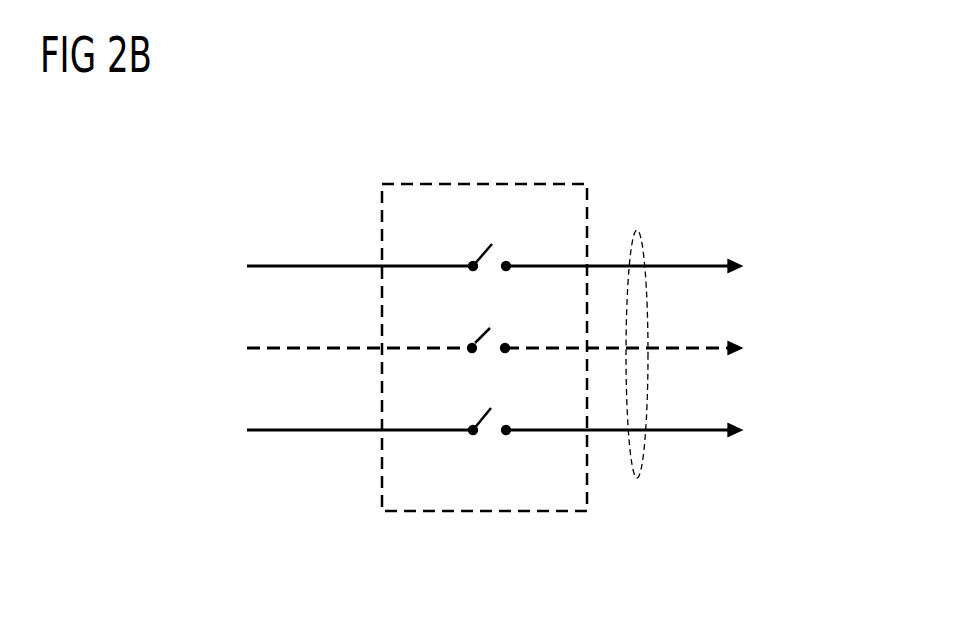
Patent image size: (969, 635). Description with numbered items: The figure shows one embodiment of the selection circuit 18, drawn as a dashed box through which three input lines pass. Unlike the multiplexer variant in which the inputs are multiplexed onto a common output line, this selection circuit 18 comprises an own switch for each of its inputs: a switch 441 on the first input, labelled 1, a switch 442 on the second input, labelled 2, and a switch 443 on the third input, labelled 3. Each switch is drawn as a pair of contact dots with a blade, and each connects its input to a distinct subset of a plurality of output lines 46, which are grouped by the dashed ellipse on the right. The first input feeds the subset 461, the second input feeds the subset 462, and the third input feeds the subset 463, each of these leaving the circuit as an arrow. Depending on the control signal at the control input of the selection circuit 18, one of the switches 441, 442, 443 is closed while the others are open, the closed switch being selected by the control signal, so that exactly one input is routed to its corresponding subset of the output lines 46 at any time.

The selection circuit 18 is at (378, 180).
The first line 1 is at (398, 248).
The second line 2 is at (398, 418).
The third line 3 is at (398, 335).
The switch 441 is at (477, 262).
The switch 442 is at (493, 412).
The switch 443 is at (488, 330).
The plurality of output lines 46 is at (637, 230).
The subset of output lines 461 is at (670, 263).
The subset of output lines 462 is at (677, 433).
The subset of output lines 463 is at (705, 345).